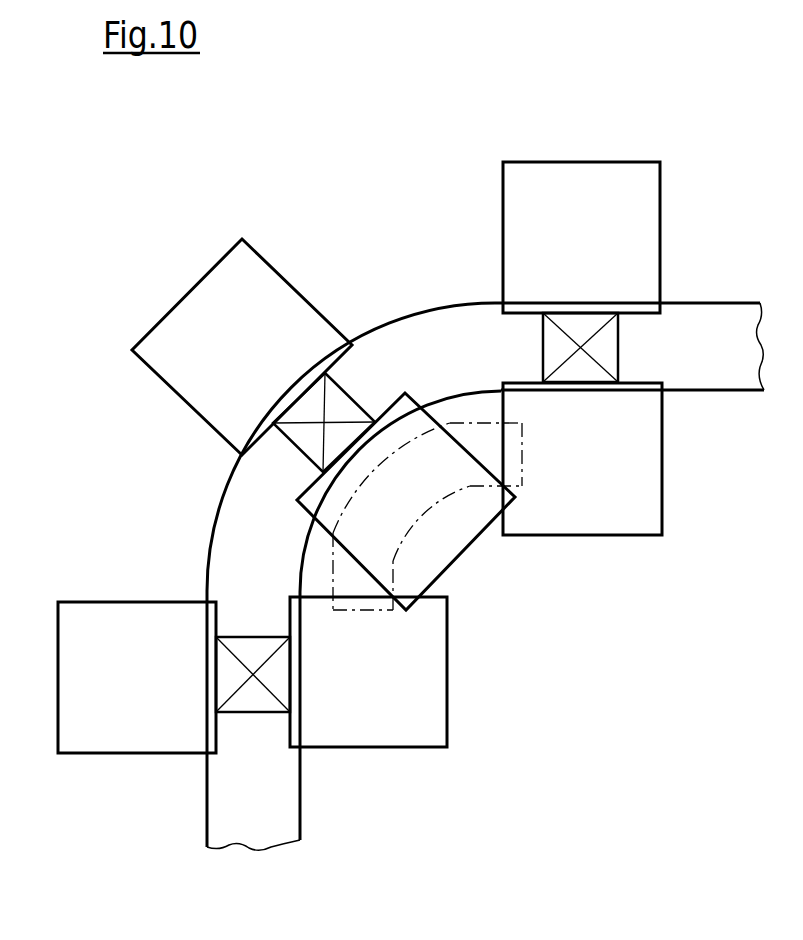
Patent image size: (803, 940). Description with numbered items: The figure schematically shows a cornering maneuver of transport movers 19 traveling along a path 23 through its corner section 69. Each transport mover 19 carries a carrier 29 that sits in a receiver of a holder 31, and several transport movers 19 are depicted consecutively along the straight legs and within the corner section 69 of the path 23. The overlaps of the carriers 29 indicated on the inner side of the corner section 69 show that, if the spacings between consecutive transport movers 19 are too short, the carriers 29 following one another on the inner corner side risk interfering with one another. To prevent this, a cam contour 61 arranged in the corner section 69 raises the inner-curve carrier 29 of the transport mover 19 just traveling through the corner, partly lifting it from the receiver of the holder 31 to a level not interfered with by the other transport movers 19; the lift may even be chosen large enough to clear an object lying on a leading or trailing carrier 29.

The transport mover 19 is at (177, 242).
The carrier 29 is at (255, 247).
The holder 31 is at (622, 337).
The cam contour 61 is at (477, 438).
The corner section 69 is at (371, 308).
The path 23 is at (303, 830).